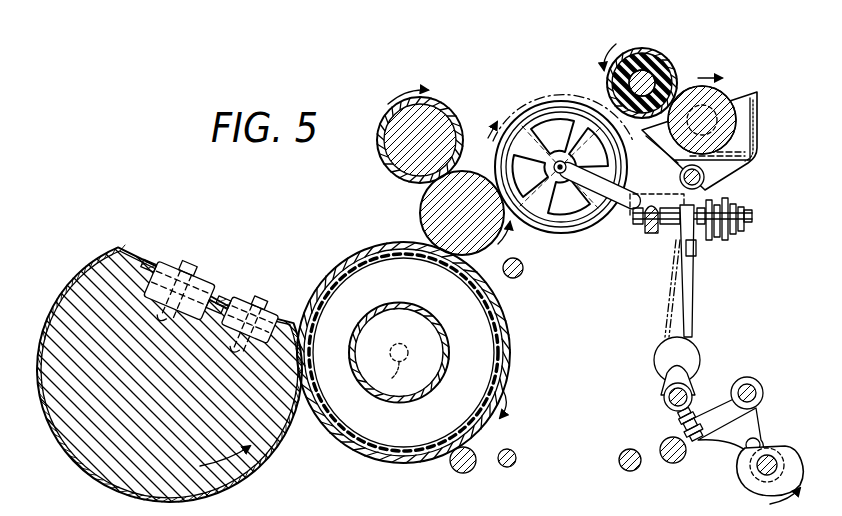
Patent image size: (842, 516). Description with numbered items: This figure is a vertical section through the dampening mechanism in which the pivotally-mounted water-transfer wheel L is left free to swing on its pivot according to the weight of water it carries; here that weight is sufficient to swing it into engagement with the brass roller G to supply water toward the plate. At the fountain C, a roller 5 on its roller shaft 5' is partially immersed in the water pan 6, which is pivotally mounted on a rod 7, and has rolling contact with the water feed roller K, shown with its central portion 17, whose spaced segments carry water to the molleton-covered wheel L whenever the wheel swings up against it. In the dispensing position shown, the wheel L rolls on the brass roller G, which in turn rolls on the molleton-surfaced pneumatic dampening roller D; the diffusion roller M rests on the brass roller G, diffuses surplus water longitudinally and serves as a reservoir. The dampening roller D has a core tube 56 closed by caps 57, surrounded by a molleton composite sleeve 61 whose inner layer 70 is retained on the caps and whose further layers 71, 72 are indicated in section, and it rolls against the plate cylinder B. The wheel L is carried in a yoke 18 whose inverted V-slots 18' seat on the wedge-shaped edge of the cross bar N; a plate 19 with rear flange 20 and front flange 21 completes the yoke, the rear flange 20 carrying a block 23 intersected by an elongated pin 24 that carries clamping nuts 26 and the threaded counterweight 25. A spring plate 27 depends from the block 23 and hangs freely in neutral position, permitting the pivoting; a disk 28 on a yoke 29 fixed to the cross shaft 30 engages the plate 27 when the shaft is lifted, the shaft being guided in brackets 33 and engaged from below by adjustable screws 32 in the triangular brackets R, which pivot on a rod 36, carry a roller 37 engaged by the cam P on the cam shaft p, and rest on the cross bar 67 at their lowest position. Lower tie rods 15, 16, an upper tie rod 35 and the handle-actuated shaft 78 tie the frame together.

The blanket cylinder l is at (106, 250).
The plate cylinder B is at (290, 318).
The dampening roller D is at (511, 328).
The metal tube 56 is at (402, 282).
The caps 57 is at (342, 405).
The molleton composite sleeve 61 is at (332, 454).
The outer layer 71 is at (358, 460).
The intermediate layer 72 is at (386, 462).
The inner layer 70 is at (428, 458).
The handle-actuated shaft 78 is at (462, 474).
The lower tie rod 15 is at (516, 458).
The upper tie rod 35 is at (524, 266).
The diffusion roller M is at (378, 146).
The brass roller G is at (420, 213).
The wheel L is at (527, 109).
The yoke 18 is at (577, 168).
The water feed roller K is at (644, 62).
The roller hub 17 is at (655, 72).
The moisture fountain C is at (760, 100).
The water pan 6 is at (760, 128).
The roller 5 is at (702, 102).
The roller shaft 5' is at (716, 103).
The rod 7 is at (680, 174).
The rear flange 20 is at (681, 179).
The plate 19 is at (646, 196).
The front flange 21 is at (632, 212).
The cross bar N is at (645, 234).
The inverted V-slots 18' is at (618, 247).
The clamping nuts 26 is at (672, 228).
The spring plate 27 is at (695, 313).
The block 23 is at (694, 258).
The threaded counterweight 25 is at (722, 206).
The elongated pin 24 is at (752, 214).
The disk 28 is at (660, 350).
The yoke 29 is at (668, 378).
The cross shaft 30 is at (664, 398).
The brackets 33 is at (694, 422).
The adjustable screws 32 is at (680, 426).
The rear side bracket R is at (728, 396).
The rod 36 is at (755, 385).
The roller 37 is at (762, 446).
The cam P is at (757, 494).
The cam shaft p is at (756, 466).
The cross bar 67 is at (668, 464).
The lower tie rod 16 is at (624, 470).